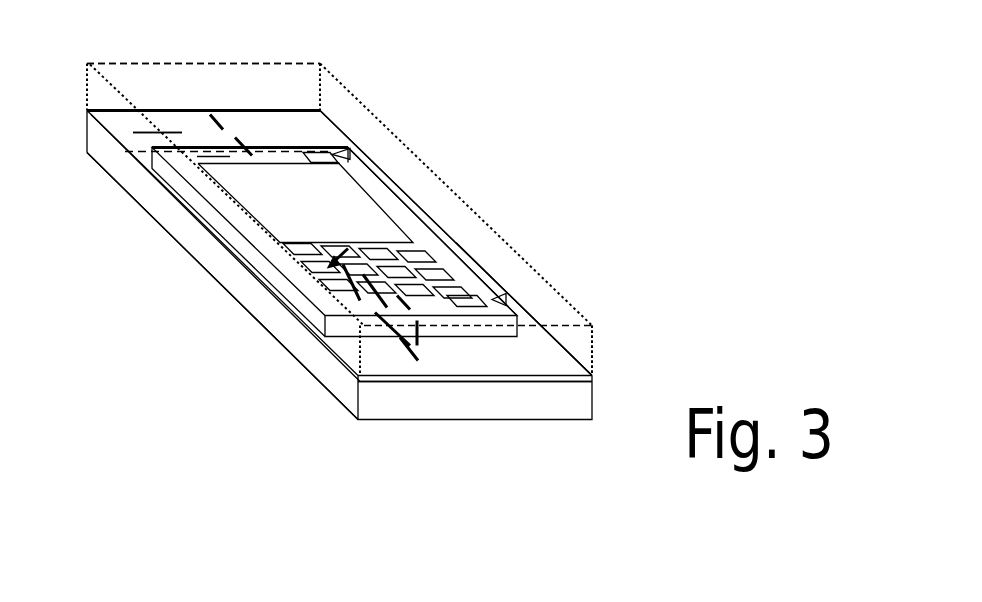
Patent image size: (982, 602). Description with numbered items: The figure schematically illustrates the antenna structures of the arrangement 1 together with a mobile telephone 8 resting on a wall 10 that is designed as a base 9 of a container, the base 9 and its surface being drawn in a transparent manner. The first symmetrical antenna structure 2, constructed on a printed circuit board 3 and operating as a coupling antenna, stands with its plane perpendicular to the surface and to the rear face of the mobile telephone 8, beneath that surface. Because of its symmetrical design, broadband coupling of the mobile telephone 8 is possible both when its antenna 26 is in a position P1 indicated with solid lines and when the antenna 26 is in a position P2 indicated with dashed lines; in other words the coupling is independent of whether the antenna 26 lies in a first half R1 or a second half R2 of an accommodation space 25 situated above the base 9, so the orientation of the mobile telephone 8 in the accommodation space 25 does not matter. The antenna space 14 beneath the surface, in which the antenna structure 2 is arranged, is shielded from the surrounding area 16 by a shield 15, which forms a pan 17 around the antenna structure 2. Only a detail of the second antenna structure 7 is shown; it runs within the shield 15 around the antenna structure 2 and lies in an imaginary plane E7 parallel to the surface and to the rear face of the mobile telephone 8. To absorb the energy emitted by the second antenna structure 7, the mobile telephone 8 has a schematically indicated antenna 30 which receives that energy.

The arrangement 1 is at (422, 95).
The first antenna structure 2 is at (403, 303).
The printed circuit board 3 is at (383, 350).
The second antenna structure 7 is at (148, 128).
The mobile telephone 8 is at (407, 197).
The base 9 is at (533, 340).
The wall 10 is at (524, 309).
The antenna space 14 is at (473, 360).
The shield 15 is at (268, 330).
The surrounding area 16 is at (103, 280).
The pan 17 is at (447, 402).
The accommodation space 25 is at (280, 83).
The antenna 26 is at (322, 155).
The antenna 30 is at (208, 153).
The imaginary plane E7 is at (167, 128).
The position P1 is at (506, 297).
The position P2 is at (350, 151).
The first half R1 is at (237, 78).
The second half R2 is at (553, 317).